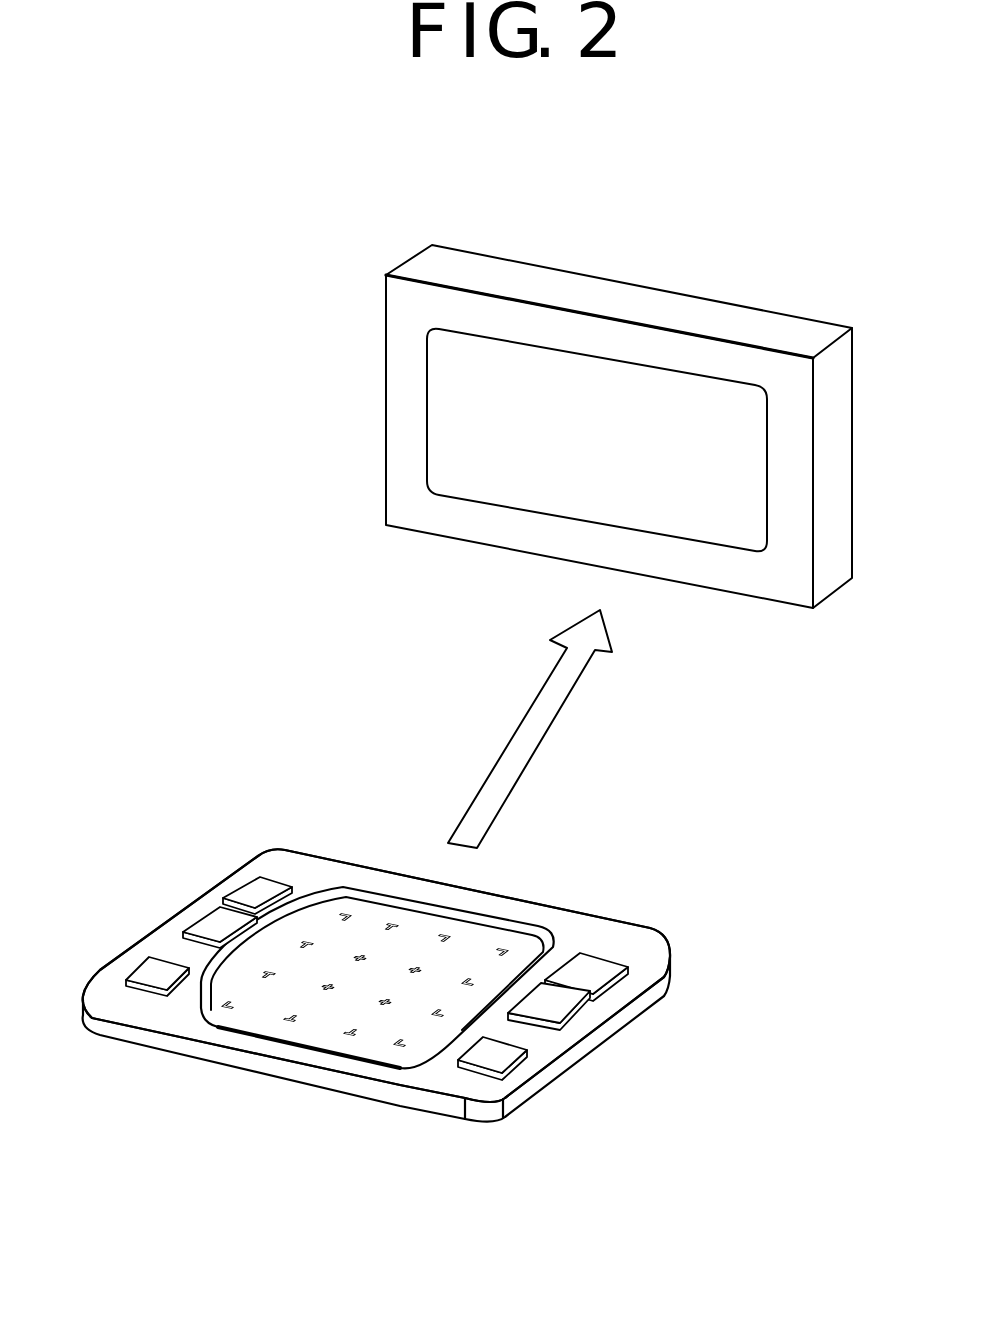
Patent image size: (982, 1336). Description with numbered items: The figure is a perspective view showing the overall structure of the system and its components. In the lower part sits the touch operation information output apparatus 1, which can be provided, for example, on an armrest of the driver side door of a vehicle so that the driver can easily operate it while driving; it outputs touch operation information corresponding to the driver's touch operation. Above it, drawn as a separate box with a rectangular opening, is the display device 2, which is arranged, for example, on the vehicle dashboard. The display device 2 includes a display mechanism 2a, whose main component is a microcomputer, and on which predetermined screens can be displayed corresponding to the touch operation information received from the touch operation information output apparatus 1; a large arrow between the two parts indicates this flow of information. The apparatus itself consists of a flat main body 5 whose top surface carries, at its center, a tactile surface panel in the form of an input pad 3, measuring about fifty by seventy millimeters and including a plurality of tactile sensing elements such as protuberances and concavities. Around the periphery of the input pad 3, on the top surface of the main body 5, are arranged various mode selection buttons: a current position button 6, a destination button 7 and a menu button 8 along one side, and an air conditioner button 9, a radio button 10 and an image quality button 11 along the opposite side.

The touch operation information output apparatus 1 is at (531, 1112).
The display device 2 is at (662, 291).
The display mechanism 2a is at (736, 593).
The input pad 3 is at (283, 1023).
The main body 5 is at (568, 907).
The current position button 6 is at (237, 888).
The destination button 7 is at (183, 923).
The menu button 8 is at (128, 964).
The air conditioner button 9 is at (625, 978).
The radio button 10 is at (588, 1026).
The image quality button 11 is at (527, 1076).